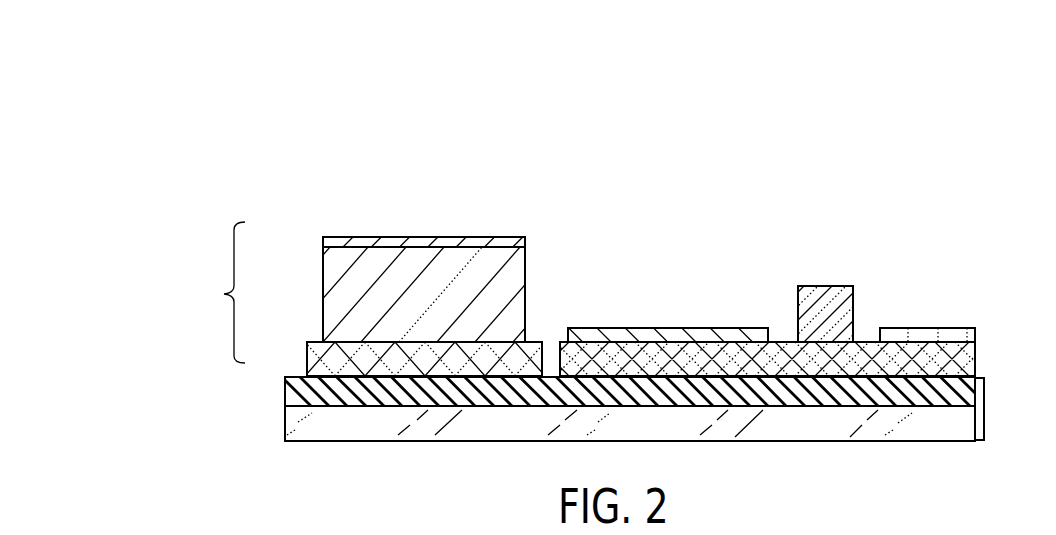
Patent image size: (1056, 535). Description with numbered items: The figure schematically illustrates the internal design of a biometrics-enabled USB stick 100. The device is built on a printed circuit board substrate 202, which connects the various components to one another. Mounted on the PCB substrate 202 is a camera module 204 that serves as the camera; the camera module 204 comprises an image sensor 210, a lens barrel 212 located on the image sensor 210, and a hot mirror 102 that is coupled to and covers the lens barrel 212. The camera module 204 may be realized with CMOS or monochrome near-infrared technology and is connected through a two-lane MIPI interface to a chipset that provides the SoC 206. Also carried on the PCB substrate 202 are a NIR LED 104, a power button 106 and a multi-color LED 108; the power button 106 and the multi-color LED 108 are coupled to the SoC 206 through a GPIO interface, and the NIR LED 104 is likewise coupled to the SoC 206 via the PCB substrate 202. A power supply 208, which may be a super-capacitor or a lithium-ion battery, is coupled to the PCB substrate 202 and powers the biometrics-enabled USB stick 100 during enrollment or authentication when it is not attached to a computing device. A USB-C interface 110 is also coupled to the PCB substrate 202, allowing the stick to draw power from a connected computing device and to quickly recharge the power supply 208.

The biometrics-enabled USB stick 100 is at (256, 120).
The hot mirror 102 is at (518, 243).
The NIR LED 104 is at (825, 294).
The power button 106 is at (668, 337).
The multi-color LED 108 is at (929, 335).
The USB-C interface 110 is at (985, 416).
The PCB substrate 202 is at (286, 396).
The camera module 204 is at (217, 292).
The SoC 206 is at (975, 359).
The power supply 208 is at (295, 428).
The image sensor 210 is at (318, 362).
The lens barrel 212 is at (527, 294).